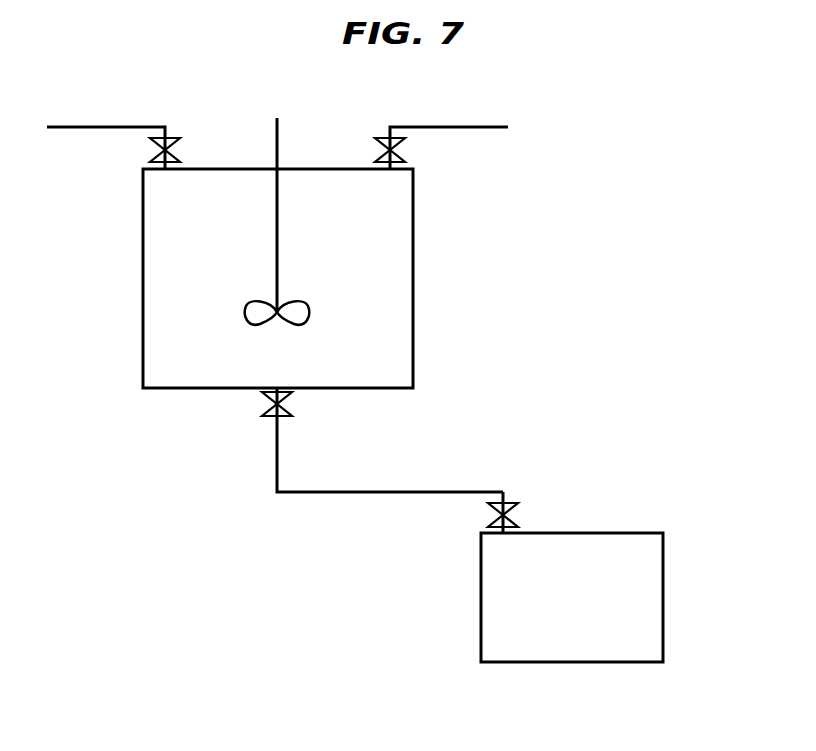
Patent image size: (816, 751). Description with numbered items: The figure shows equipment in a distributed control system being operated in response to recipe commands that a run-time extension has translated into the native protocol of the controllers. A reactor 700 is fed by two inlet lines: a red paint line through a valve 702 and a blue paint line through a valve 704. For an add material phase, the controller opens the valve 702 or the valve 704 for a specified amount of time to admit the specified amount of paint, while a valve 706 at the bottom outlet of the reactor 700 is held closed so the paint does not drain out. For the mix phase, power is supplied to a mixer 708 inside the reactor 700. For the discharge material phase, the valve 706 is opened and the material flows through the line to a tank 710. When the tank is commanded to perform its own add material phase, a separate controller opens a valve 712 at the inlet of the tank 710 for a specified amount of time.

The reactor 1 700 is at (418, 214).
The valve 702 is at (175, 141).
The valve 704 is at (380, 141).
The valve 706 is at (262, 418).
The mixer 708 is at (298, 302).
The tank 1 710 is at (668, 547).
The valve 712 is at (513, 505).